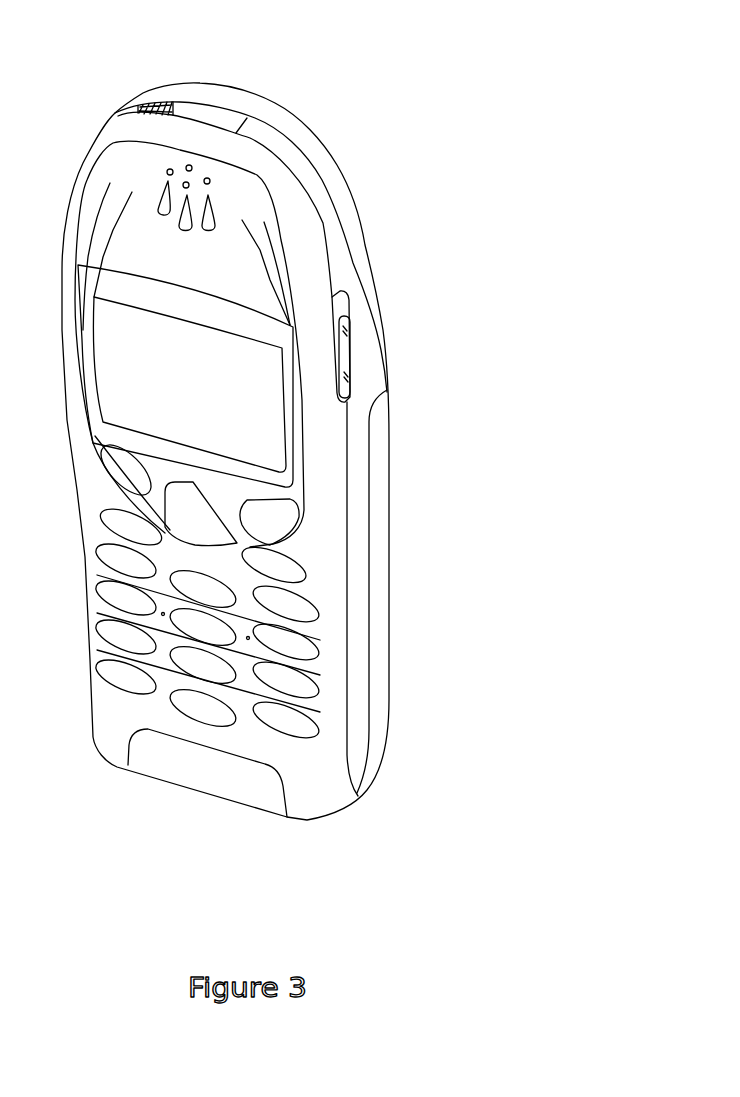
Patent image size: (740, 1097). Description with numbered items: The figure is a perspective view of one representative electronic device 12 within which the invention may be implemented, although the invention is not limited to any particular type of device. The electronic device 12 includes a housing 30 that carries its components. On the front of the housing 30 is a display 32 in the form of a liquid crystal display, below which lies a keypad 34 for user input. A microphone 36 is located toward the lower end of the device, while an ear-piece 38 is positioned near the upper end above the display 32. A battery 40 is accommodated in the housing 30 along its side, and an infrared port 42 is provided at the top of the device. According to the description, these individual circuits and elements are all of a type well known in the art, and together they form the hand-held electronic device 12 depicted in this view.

The electronic device 12 is at (241, 457).
The housing 30 is at (355, 230).
The display 32 is at (263, 423).
The keypad 34 is at (284, 727).
The microphone 36 is at (150, 760).
The ear-piece 38 is at (170, 193).
The battery 40 is at (382, 708).
The infrared port 42 is at (210, 113).